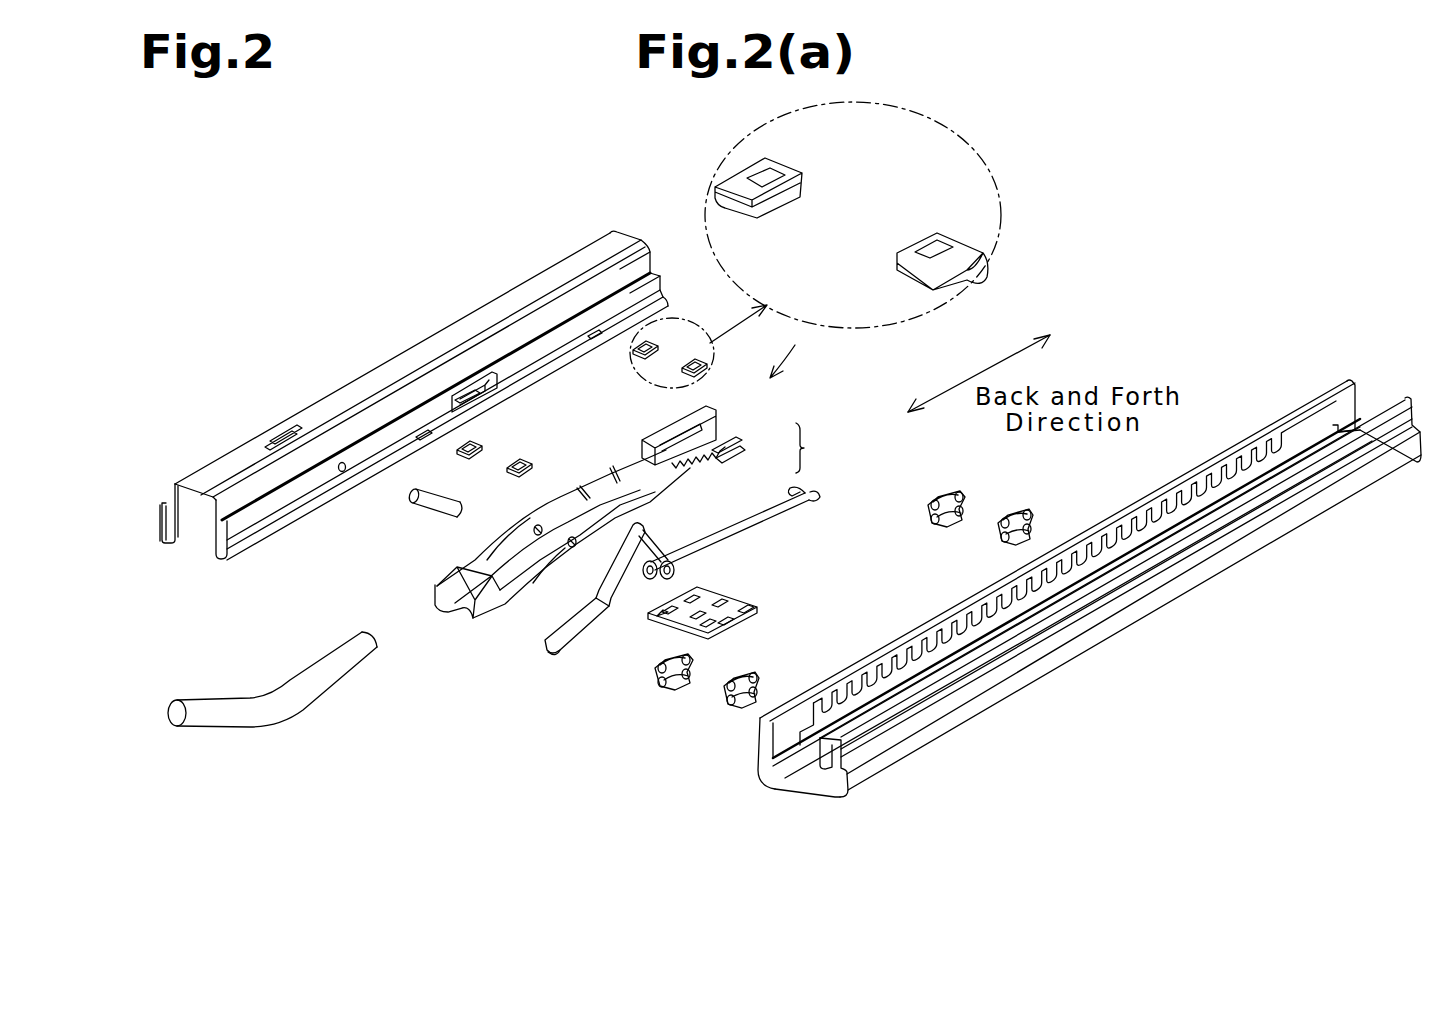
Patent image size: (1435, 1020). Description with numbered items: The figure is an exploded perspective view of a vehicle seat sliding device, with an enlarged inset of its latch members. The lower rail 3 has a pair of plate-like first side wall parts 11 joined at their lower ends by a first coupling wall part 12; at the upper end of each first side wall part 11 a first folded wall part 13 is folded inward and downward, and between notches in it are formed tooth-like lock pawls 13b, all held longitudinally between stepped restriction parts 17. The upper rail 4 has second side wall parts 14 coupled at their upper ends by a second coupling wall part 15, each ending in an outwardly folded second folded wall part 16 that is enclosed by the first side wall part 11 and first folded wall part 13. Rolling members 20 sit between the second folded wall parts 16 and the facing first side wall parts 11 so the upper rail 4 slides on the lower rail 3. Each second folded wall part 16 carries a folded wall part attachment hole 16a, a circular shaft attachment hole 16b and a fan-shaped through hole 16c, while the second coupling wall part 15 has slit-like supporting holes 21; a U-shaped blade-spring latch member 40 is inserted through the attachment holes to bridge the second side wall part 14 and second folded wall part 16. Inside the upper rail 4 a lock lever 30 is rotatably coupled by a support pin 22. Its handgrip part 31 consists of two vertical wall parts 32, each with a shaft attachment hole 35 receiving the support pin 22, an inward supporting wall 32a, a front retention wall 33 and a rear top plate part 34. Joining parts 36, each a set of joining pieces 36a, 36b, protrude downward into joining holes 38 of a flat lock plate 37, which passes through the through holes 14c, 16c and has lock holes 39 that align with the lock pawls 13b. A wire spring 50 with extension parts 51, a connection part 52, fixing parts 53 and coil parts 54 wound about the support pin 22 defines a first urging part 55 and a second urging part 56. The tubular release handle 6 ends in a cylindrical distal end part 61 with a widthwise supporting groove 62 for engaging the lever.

In FIG. 2, the lower rail 3 is at (1067, 606).
In FIG. 2, the upper rail 4 is at (588, 256).
In FIG. 2, the release handle 6 is at (272, 703).
In FIG. 2, the first side wall parts 11 is at (775, 745).
In FIG. 2, the first coupling wall part 12 is at (790, 785).
In FIG. 2, the first folded wall part 13 is at (836, 737).
In FIG. 2, the lock pawls 13b is at (1268, 440).
In FIG. 2, the second side wall parts 14 is at (190, 547).
In FIG. 2, the through hole 14c is at (480, 383).
In FIG. 2, the second coupling wall part 15 is at (207, 478).
In FIG. 2, the second folded wall part 16 is at (160, 510).
In FIG. 2, the folded wall part attachment hole 16a is at (598, 334).
In FIG. 2, the shaft attachment hole 16b is at (343, 473).
In FIG. 2, the fan-shaped through hole 16c is at (507, 405).
In FIG. 2, the restriction part 17 is at (1350, 460).
In FIG. 2, the rolling members 20 is at (665, 695).
In FIG. 2, the supporting holes 21 is at (273, 430).
In FIG. 2, the support pin 22 is at (438, 508).
In FIG. 2, the lock lever 30 is at (789, 351).
In FIG. 2, the handgrip part 31 is at (616, 525).
In FIG. 2, the vertical wall parts 32 is at (447, 597).
In FIG. 2, the supporting wall 32a is at (487, 560).
In FIG. 2, the retention wall 33 is at (453, 575).
In FIG. 2, the top plate part 34 is at (700, 413).
In FIG. 2, the shaft attachment hole 35 is at (552, 565).
In FIG. 2, the joining parts 36 is at (753, 468).
In FIG. 2, the joining piece 36a is at (722, 464).
In FIG. 2, the joining piece 36b is at (718, 448).
In FIG. 2, the lock plate 37 is at (713, 605).
In FIG. 2, the joining holes 38 is at (677, 610).
In FIG. 2, the lock holes 39 is at (670, 587).
In FIG. 2, the latch member 40 is at (523, 465).
In FIG. 2A, the latch member 40 is at (778, 165).
In FIG. 2, the wire spring 50 is at (611, 604).
In FIG. 2, the extension parts 51 is at (758, 528).
In FIG. 2, the connection part 52 is at (553, 645).
In FIG. 2, the fixing part 53 is at (653, 543).
In FIG. 2, the coil part 54 is at (643, 575).
In FIG. 2, the first urging part 55 is at (823, 495).
In FIG. 2, the second urging part 56 is at (583, 648).
In FIG. 2, the distal end part 61 is at (285, 684).
In FIG. 2, the supporting groove 62 is at (313, 697).